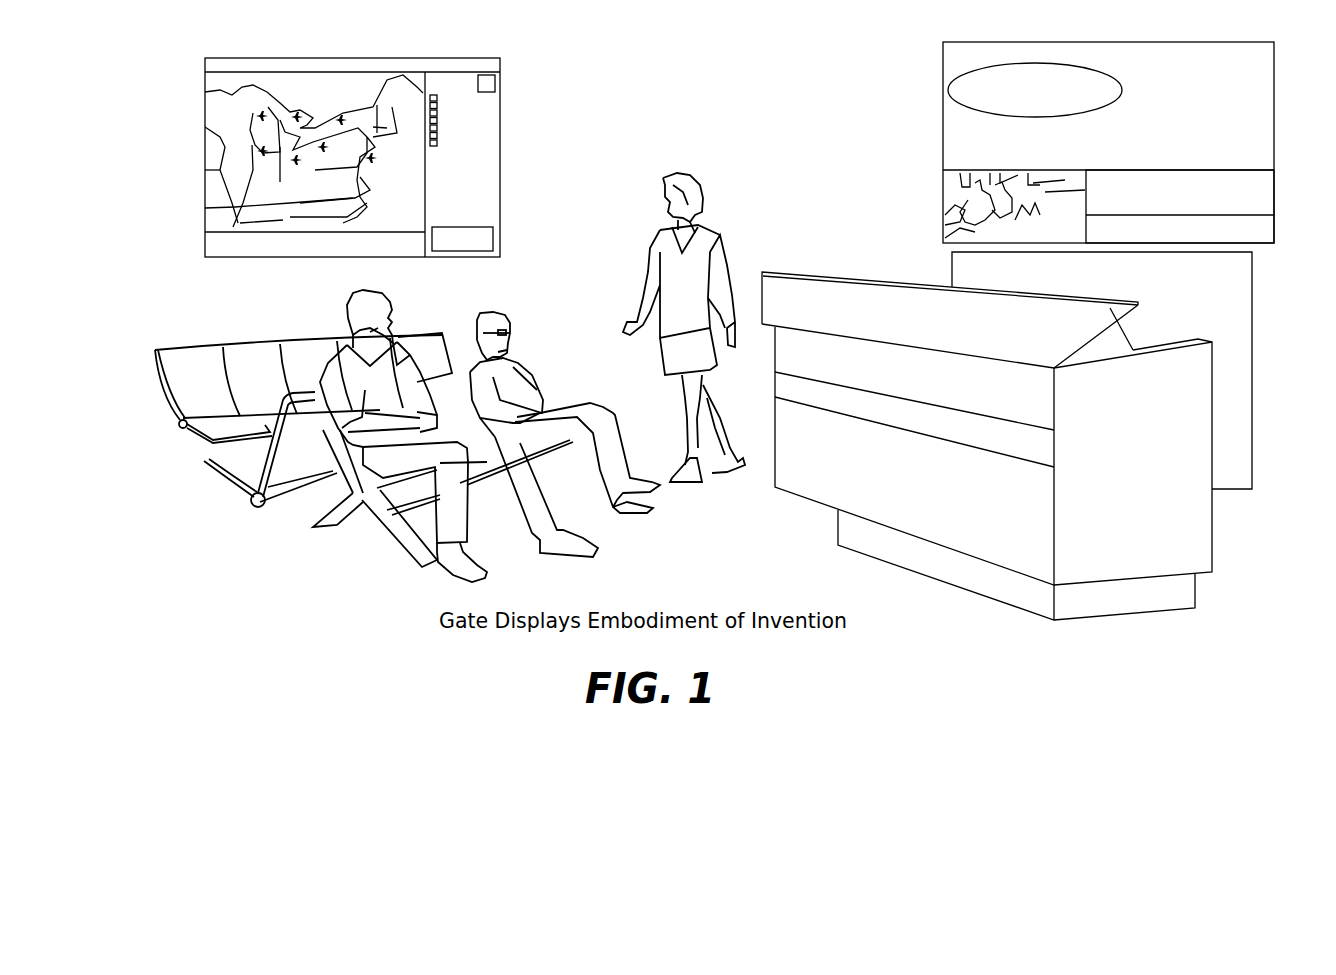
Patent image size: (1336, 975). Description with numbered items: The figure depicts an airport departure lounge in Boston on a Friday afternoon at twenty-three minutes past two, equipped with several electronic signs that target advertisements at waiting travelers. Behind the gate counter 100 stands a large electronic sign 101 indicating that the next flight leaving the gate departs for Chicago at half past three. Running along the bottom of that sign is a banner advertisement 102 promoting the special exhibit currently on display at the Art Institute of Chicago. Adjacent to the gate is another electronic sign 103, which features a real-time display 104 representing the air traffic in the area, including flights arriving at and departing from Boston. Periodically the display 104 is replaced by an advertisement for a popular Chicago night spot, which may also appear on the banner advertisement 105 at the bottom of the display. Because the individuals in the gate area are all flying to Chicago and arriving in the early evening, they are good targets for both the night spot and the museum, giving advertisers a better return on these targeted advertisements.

The gate counter 100 is at (868, 327).
The large electronic sign 101 is at (1031, 45).
The banner advertisement 102 is at (1263, 177).
The electronic sign 103 is at (360, 65).
The real-time display 104 is at (218, 157).
The banner advertisement 105 is at (208, 242).